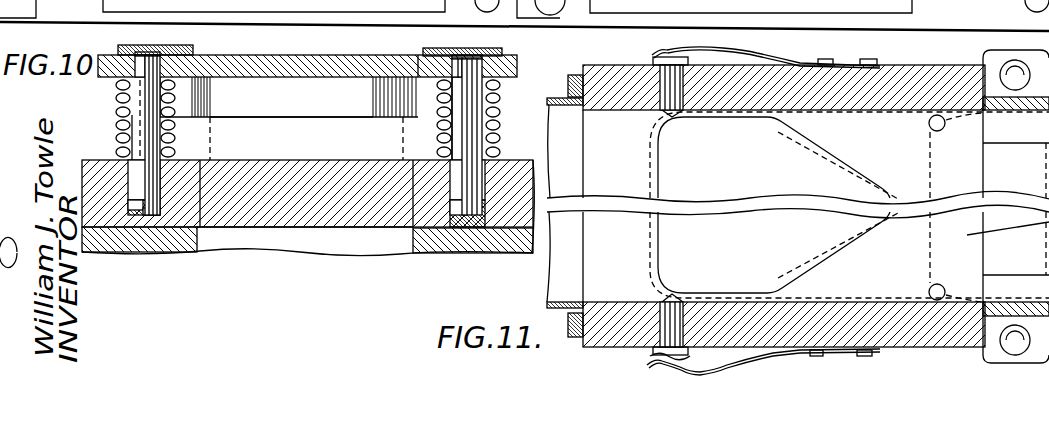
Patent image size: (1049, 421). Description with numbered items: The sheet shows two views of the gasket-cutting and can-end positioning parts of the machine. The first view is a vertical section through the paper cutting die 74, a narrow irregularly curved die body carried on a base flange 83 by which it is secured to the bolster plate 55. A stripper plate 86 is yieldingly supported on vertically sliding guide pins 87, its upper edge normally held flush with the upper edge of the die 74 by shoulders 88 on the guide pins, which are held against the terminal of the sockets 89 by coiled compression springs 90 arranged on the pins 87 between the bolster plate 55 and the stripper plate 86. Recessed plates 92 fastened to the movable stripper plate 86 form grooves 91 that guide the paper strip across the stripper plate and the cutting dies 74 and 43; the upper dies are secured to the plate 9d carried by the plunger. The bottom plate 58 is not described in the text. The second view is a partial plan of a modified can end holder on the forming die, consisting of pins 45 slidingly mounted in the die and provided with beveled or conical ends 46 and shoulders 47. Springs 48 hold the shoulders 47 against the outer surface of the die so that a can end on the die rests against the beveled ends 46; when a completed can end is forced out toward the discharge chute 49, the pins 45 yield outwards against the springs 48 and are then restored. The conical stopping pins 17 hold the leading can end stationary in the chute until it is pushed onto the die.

In FIG. 10, the stripper plate 86 is at (263, 52).
In FIG. 10, the paper cutting die 74 is at (313, 92).
In FIG. 10, the base flange 83 is at (242, 113).
In FIG. 10, the bolster plate 55 is at (273, 215).
In FIG. 10, the bottom plate 58 is at (360, 252).
In FIG. 10, the shoulders 88 is at (137, 212).
In FIG. 10, the sockets 89 is at (150, 218).
In FIG. 10, the guide pins 87 is at (143, 105).
In FIG. 10, the recessed plates 92 is at (182, 45).
In FIG. 10, the grooves 91 is at (197, 53).
In FIG. 10, the coiled compression springs 90 is at (117, 127).
In FIG. 11, the die 43 is at (902, 350).
In FIG. 11, the discharge chute 49 is at (553, 275).
In FIG. 11, the conical stopping pins 17 is at (928, 125).
In FIG. 11, the pins 45 is at (655, 62).
In FIG. 11, the beveled or conical ends 46 is at (668, 115).
In FIG. 11, the shoulders 47 is at (663, 350).
In FIG. 11, the springs 48 is at (750, 53).
In FIG. 11, the plate 9d is at (960, 23).